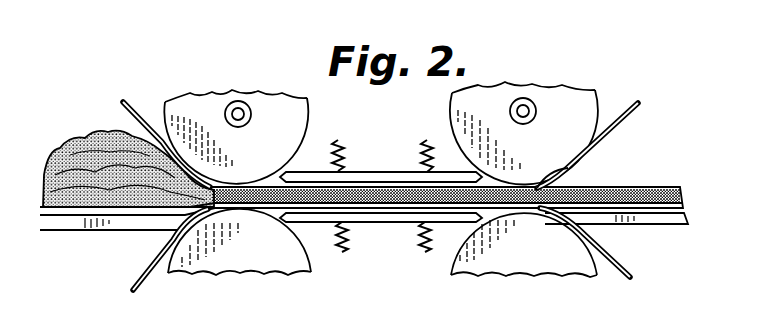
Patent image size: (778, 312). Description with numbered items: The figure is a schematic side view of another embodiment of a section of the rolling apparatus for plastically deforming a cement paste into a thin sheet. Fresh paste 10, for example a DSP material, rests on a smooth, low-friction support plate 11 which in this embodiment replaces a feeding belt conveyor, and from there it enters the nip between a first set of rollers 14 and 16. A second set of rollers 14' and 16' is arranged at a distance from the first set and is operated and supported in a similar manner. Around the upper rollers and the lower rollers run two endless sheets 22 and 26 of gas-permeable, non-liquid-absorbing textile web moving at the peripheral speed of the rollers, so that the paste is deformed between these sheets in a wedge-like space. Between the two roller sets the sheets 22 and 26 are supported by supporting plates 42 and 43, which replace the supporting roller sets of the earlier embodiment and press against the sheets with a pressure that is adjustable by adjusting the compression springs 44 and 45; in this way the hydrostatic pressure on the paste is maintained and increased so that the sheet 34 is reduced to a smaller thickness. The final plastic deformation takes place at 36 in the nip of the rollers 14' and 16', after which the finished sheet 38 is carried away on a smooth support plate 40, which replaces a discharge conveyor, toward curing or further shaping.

The fresh paste 10 is at (80, 136).
The support plate 11 is at (100, 223).
The roller 14 is at (236, 119).
The roller 14' is at (526, 120).
The roller 16 is at (239, 257).
The roller 16' is at (524, 259).
The endless sheet 22 is at (145, 114).
The endless sheet 26 is at (140, 286).
The sheet 34 is at (376, 213).
The final plastic deformation 36 is at (575, 180).
The finished sheet 38 is at (640, 190).
The support plate 40 is at (628, 222).
The supporting plate 42 is at (408, 180).
The supporting plate 43 is at (354, 232).
The compression spring 44 is at (352, 142).
The compression spring 45 is at (420, 238).